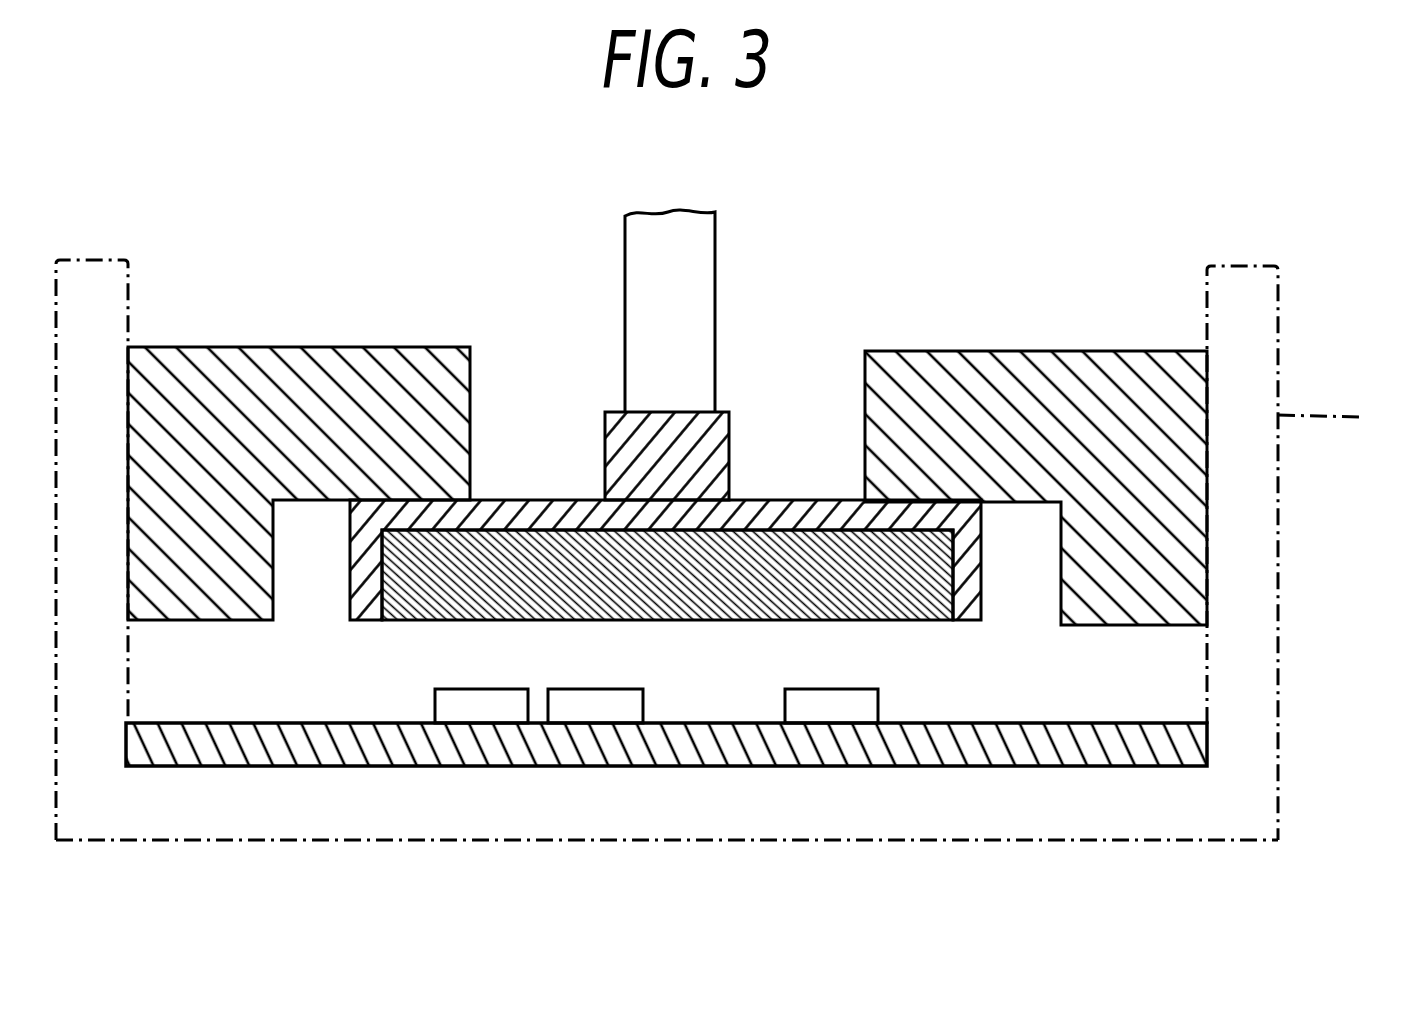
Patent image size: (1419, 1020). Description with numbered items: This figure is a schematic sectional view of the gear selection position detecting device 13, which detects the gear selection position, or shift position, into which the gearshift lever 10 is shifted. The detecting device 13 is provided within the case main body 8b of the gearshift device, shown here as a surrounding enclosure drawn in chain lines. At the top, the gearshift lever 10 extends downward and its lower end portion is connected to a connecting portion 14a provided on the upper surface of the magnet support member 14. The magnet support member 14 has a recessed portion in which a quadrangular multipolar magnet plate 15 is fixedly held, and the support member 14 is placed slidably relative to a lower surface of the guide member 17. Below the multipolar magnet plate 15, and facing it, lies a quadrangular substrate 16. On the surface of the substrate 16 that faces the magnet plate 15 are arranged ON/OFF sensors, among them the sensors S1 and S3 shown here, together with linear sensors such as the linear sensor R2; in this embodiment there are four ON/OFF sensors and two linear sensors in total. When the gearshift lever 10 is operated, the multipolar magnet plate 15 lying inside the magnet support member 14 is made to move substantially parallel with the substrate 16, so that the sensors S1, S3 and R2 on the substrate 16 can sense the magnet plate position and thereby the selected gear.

The case main body 8b is at (728, 550).
The gearshift lever 10 is at (715, 262).
The gear selection position detecting device 13 is at (511, 425).
The magnet support member 14 is at (820, 500).
The connecting portion 14a is at (605, 460).
The multipolar magnet plate 15 is at (705, 622).
The substrate 16 is at (200, 722).
The guide member 17 is at (985, 351).
The ON/OFF sensor S1 is at (470, 688).
The ON/OFF sensor S3 is at (585, 688).
The linear sensor R2 is at (878, 707).